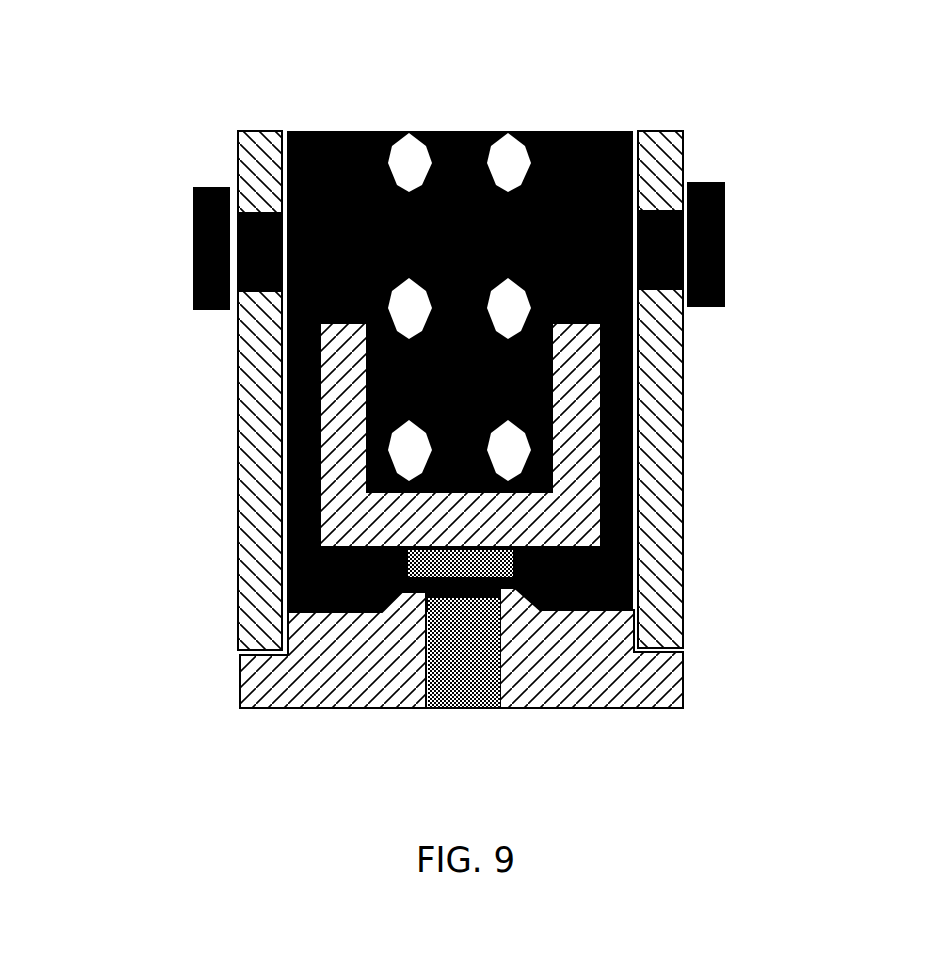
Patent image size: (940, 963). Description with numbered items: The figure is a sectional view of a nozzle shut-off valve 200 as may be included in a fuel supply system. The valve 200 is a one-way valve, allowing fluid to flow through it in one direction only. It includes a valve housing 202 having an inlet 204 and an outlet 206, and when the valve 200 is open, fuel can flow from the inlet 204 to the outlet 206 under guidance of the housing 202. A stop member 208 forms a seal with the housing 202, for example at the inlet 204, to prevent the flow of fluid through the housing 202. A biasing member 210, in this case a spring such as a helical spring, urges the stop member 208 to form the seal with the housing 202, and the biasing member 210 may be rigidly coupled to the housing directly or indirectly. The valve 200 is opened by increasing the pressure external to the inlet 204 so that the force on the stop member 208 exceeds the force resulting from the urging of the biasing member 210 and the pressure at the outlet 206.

The valve 200 is at (506, 410).
The valve housing 202 is at (250, 418).
The inlet 204 is at (466, 722).
The outlet 206 is at (576, 104).
The stop member 208 is at (341, 518).
The biasing member 210 is at (409, 132).